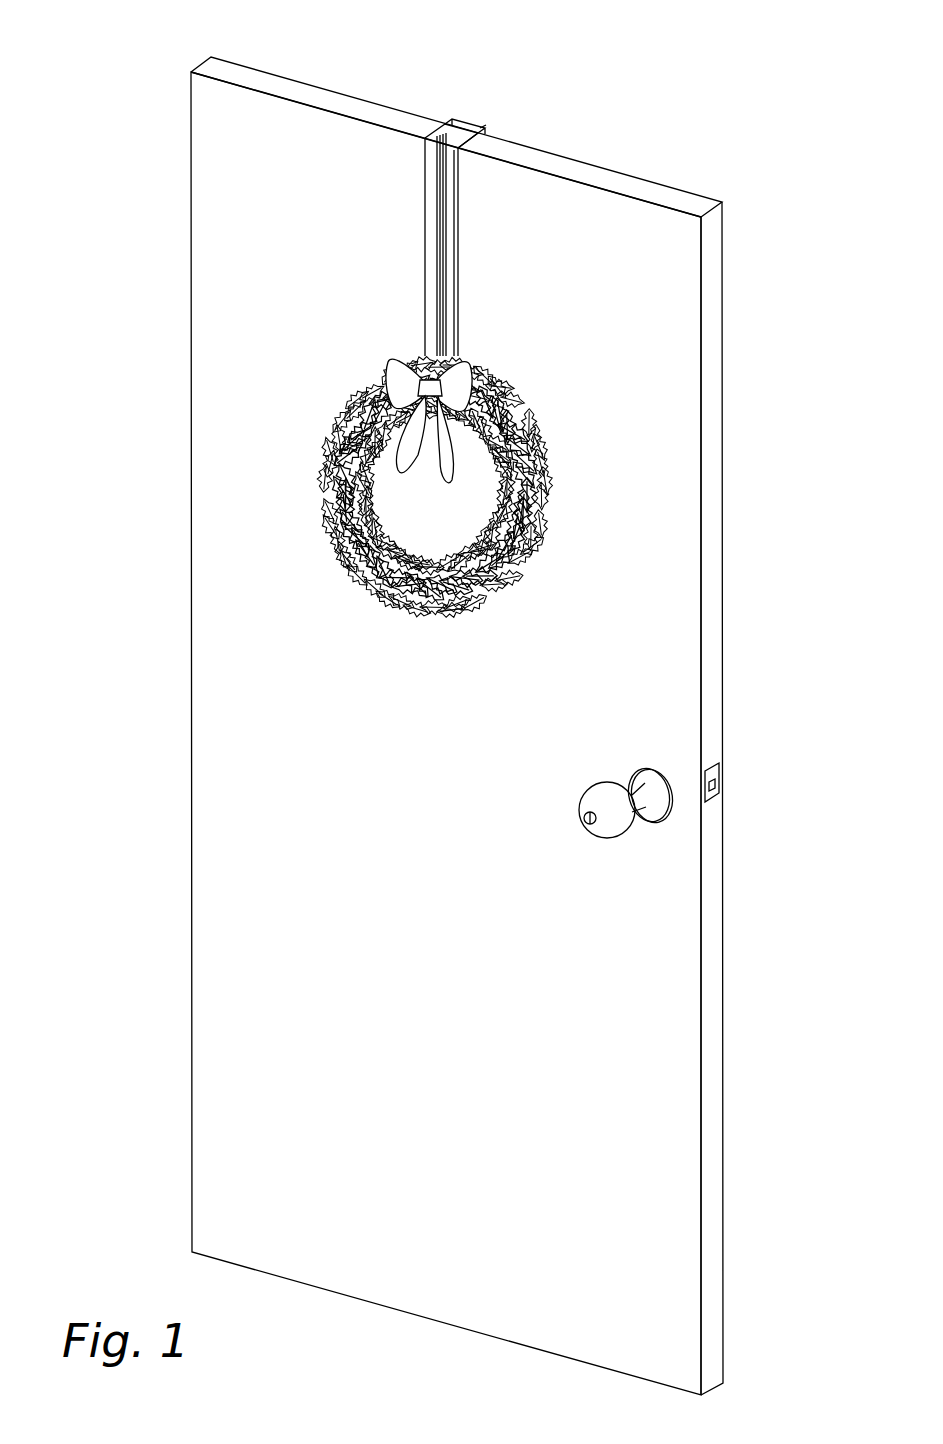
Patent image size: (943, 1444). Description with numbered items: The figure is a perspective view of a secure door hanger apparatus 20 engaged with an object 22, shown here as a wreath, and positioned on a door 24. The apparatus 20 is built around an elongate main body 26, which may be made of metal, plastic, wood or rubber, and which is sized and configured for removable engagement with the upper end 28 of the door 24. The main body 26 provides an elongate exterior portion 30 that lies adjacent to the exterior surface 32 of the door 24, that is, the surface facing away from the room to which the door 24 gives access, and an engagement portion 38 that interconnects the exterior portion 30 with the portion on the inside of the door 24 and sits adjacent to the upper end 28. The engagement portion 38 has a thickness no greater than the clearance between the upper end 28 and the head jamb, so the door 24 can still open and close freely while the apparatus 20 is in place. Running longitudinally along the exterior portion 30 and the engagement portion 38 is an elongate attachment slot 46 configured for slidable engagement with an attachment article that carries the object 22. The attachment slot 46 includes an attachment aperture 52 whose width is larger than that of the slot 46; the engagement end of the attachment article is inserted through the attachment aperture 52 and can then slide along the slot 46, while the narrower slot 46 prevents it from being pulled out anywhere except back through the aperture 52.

The secure door hanger apparatus 20 is at (439, 188).
The object 22 is at (550, 467).
The door 24 is at (686, 172).
The elongate main body 26 is at (420, 186).
The upper end of the door 28 is at (621, 178).
The elongate exterior portion 30 is at (455, 272).
The exterior surface of the door 32 is at (665, 297).
The engagement portion 38 is at (472, 135).
The elongate attachment slot 46 is at (449, 230).
The attachment aperture 52 is at (452, 128).